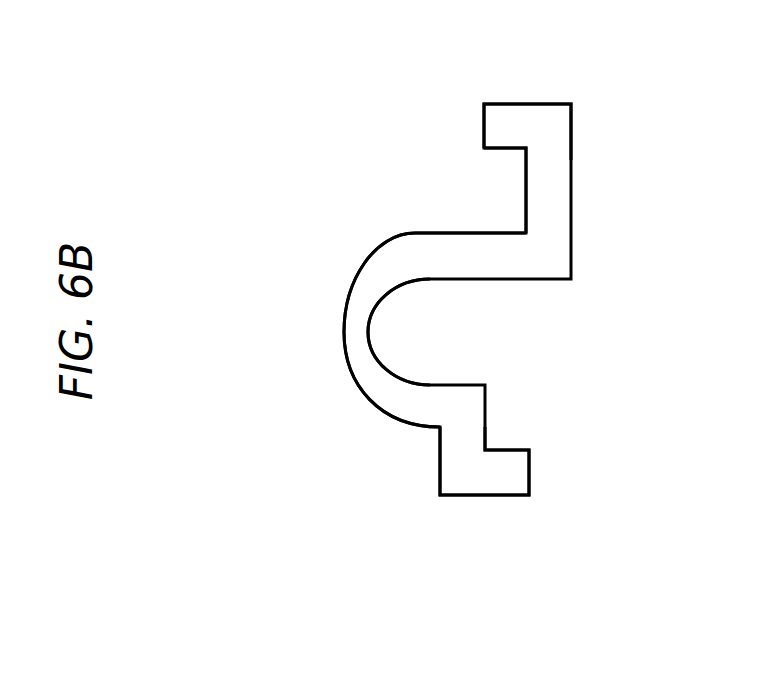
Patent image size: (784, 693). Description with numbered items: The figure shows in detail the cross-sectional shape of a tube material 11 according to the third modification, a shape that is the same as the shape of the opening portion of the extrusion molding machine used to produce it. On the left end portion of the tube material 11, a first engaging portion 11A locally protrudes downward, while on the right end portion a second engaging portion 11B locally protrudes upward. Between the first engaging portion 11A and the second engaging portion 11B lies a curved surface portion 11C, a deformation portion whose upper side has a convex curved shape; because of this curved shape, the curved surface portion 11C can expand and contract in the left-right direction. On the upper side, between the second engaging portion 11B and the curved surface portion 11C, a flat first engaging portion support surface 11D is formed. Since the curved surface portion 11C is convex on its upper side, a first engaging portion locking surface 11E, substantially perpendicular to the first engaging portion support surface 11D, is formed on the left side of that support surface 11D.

The tube material 11 is at (590, 72).
The first engaging portion 11A is at (512, 472).
The second engaging portion 11B is at (503, 121).
The curved surface portion 11C is at (368, 292).
The first engaging portion support surface 11D is at (526, 194).
The first engaging portion locking surface 11E is at (488, 233).